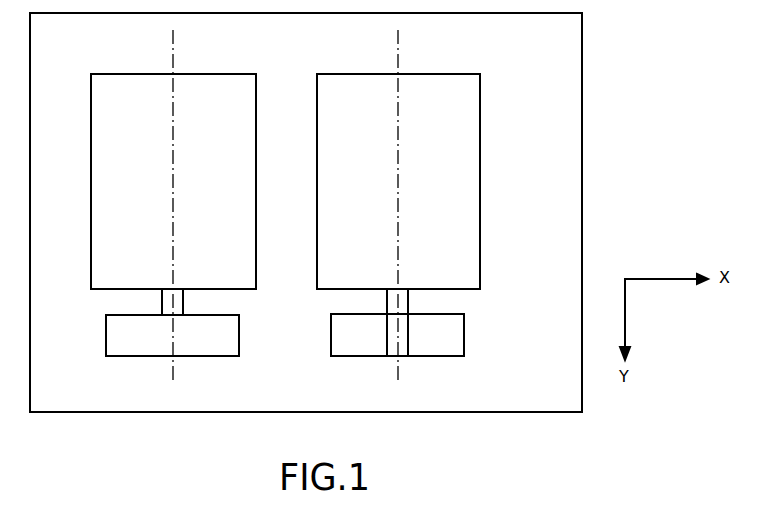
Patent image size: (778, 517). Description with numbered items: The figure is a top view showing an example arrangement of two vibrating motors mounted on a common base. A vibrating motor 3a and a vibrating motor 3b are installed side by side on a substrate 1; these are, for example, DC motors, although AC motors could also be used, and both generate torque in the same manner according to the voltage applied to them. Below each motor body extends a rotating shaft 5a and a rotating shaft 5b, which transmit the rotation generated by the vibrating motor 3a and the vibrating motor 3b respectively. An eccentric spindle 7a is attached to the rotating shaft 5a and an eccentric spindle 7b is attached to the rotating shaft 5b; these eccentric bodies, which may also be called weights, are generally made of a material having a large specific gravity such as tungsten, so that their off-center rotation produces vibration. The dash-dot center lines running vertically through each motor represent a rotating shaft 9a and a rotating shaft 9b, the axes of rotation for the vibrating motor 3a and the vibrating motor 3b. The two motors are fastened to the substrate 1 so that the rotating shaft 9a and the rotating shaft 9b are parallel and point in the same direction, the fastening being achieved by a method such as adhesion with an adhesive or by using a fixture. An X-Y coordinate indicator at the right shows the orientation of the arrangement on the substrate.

The substrate 1 is at (582, 73).
The vibrating motor 3a is at (256, 132).
The vibrating motor 3b is at (480, 122).
The rotating shaft 5a is at (183, 303).
The rotating shaft 5b is at (408, 303).
The eccentric spindle 7a is at (239, 334).
The eccentric spindle 7b is at (464, 334).
The rotating shaft 9a is at (173, 52).
The rotating shaft 9b is at (398, 52).